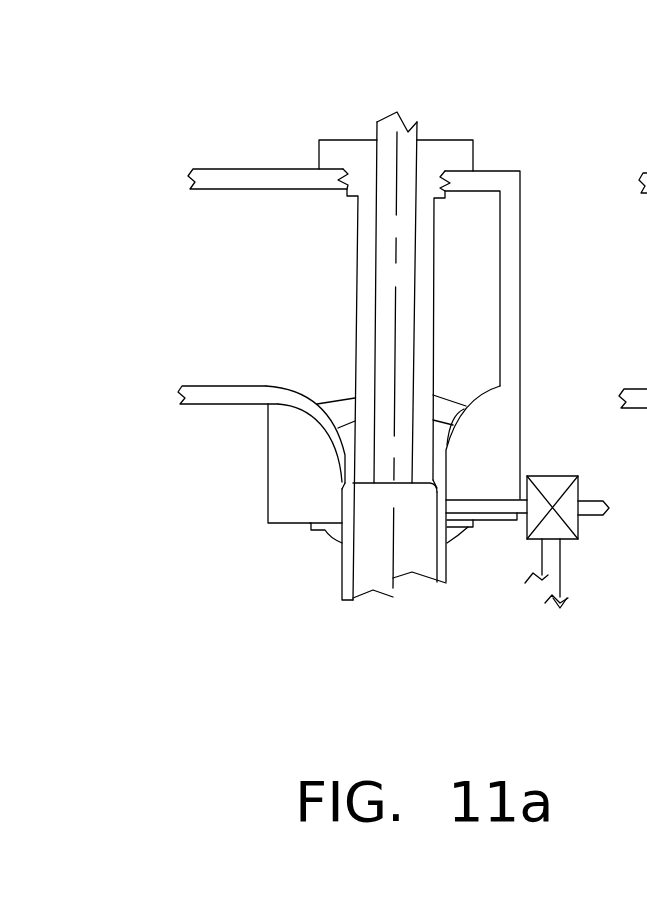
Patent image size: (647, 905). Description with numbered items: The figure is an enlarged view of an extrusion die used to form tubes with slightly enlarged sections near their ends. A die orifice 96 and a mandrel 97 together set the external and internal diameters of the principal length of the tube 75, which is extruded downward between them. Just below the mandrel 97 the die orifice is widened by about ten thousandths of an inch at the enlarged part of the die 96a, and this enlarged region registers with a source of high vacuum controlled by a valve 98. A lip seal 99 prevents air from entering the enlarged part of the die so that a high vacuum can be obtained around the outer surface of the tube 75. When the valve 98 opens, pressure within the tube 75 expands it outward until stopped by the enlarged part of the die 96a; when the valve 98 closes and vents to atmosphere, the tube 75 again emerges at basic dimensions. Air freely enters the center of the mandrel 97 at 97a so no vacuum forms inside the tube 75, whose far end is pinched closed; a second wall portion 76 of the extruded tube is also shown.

The mandrel air inlet 97a is at (406, 80).
The mandrel 97 is at (357, 312).
The die orifice 96 is at (266, 386).
The enlarged part of the die 96a is at (342, 500).
The lip seal 99 is at (338, 542).
The tube 75 is at (344, 594).
The right tube wall 76 is at (445, 582).
The valve 98 is at (552, 476).